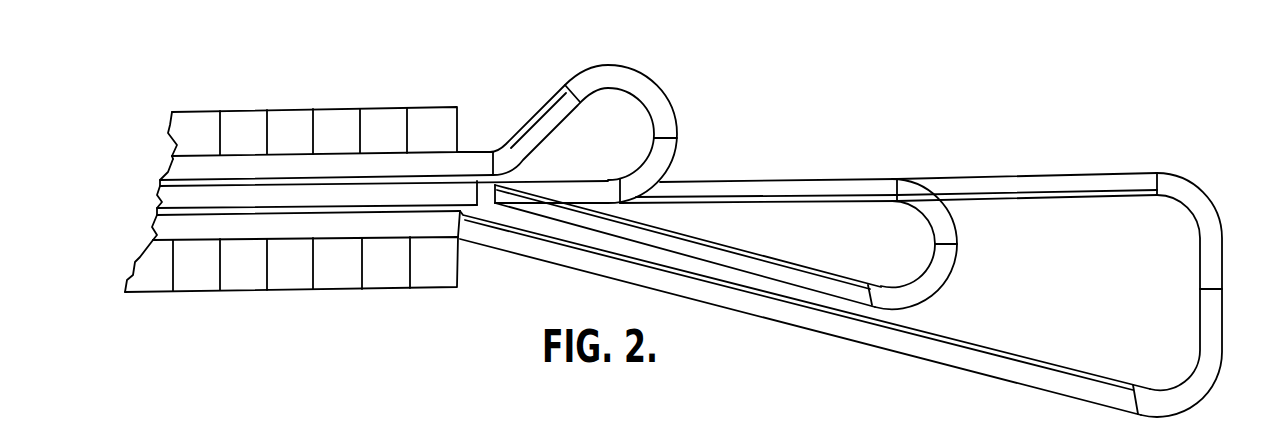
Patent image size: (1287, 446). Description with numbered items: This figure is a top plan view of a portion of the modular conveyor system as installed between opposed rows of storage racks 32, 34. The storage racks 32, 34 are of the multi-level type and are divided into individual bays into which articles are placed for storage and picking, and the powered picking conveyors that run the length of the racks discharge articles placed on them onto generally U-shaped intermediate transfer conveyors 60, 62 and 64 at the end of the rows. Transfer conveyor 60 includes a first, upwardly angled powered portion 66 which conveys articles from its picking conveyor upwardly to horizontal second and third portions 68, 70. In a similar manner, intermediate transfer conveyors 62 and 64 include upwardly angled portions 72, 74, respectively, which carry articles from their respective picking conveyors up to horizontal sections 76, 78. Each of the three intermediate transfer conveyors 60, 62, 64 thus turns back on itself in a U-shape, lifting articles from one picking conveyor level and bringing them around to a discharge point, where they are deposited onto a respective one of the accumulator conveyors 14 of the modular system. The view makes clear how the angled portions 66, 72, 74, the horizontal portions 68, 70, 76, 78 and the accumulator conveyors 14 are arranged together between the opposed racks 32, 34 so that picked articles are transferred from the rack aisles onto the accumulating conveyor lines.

The accumulator conveyors 14 is at (346, 180).
The storage rack 32 is at (460, 118).
The storage rack 34 is at (393, 287).
The intermediate transfer conveyor 60 is at (864, 269).
The intermediate transfer conveyor 62 is at (830, 182).
The intermediate transfer conveyor 64 is at (617, 134).
The first upwardly angled powered portion 66 is at (1008, 183).
The horizontal second portion 68 is at (1210, 265).
The horizontal third portion 70 is at (1067, 328).
The upwardly angled portion 72 is at (762, 187).
The upwardly angled portion 74 is at (590, 154).
The horizontal section 76 is at (938, 270).
The horizontal section 78 is at (661, 152).